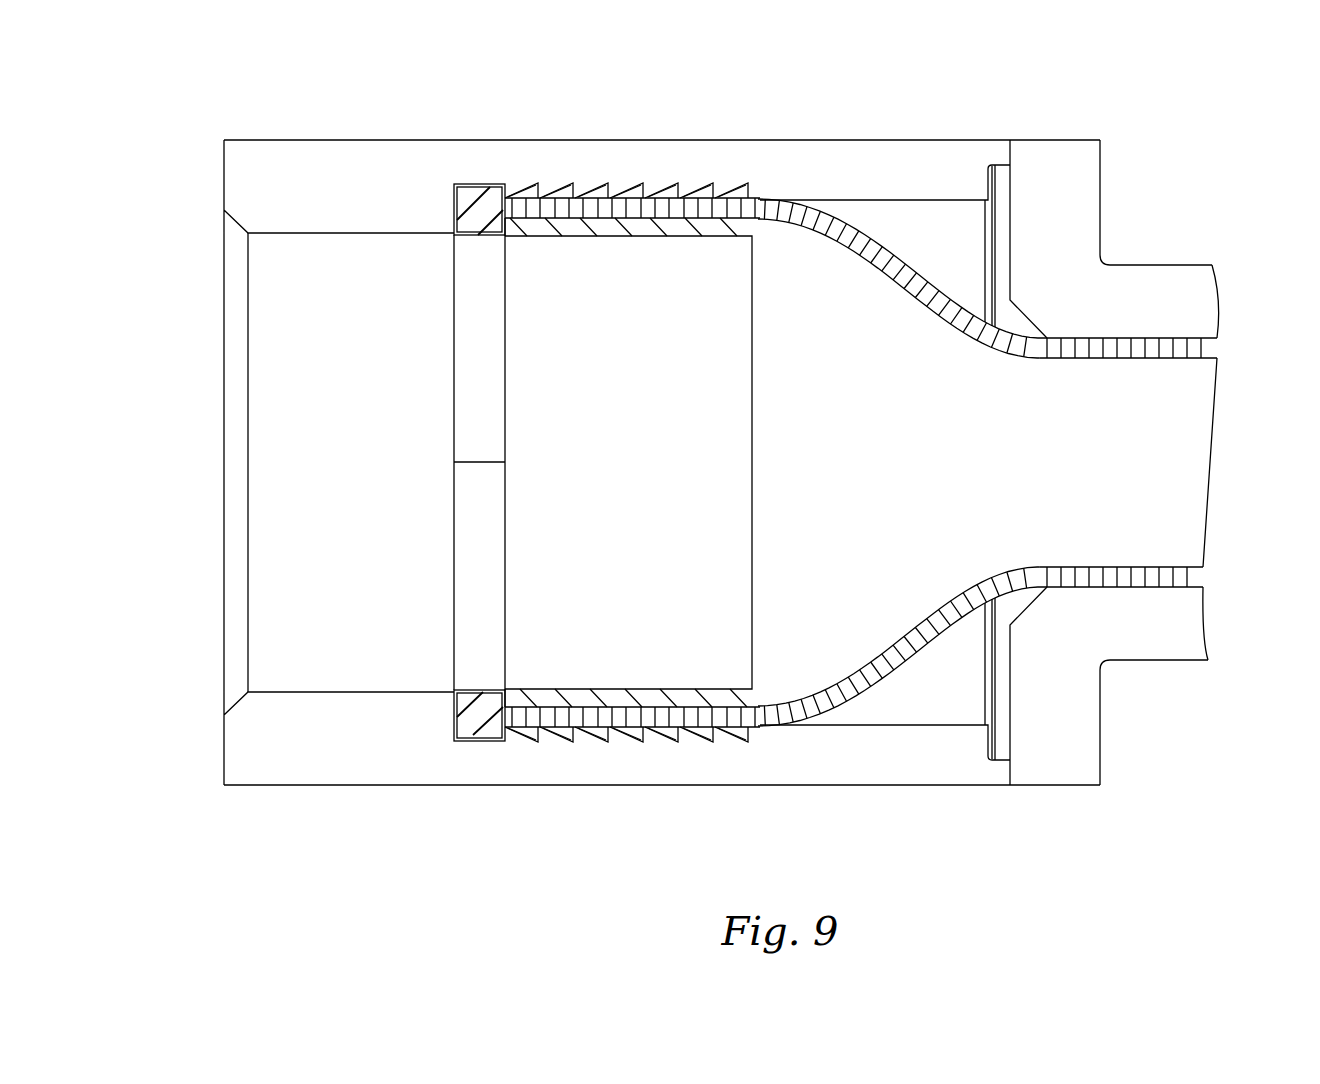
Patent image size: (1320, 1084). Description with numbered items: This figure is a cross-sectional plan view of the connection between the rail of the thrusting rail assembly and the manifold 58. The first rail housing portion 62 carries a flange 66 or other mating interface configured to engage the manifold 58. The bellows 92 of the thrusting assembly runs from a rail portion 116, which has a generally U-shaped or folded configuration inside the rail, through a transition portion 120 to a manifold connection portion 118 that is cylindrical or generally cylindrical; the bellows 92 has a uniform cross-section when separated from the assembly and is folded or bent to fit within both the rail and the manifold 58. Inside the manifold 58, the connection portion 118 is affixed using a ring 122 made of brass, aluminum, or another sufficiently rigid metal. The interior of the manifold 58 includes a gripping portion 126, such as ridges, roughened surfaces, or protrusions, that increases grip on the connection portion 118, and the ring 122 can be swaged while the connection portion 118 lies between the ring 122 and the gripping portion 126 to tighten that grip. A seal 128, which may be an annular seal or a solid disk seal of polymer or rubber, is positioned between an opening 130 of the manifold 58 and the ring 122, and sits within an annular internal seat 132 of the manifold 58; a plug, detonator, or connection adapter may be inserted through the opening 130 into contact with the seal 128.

The manifold 58 is at (318, 162).
The opening 130 is at (235, 590).
The annular internal seat 132 is at (458, 185).
The seal 128 is at (490, 198).
The ring 122 is at (620, 698).
The gripping portion 126 is at (573, 740).
The manifold connection portion 118 is at (660, 205).
The transition portion 120 is at (858, 228).
The rail portion 116 is at (1186, 343).
The bellows 92 is at (890, 690).
The flange 66 is at (1040, 732).
The first rail housing portion 62 is at (1168, 610).